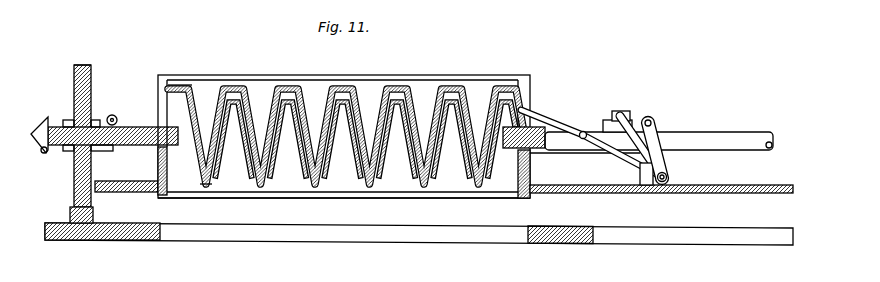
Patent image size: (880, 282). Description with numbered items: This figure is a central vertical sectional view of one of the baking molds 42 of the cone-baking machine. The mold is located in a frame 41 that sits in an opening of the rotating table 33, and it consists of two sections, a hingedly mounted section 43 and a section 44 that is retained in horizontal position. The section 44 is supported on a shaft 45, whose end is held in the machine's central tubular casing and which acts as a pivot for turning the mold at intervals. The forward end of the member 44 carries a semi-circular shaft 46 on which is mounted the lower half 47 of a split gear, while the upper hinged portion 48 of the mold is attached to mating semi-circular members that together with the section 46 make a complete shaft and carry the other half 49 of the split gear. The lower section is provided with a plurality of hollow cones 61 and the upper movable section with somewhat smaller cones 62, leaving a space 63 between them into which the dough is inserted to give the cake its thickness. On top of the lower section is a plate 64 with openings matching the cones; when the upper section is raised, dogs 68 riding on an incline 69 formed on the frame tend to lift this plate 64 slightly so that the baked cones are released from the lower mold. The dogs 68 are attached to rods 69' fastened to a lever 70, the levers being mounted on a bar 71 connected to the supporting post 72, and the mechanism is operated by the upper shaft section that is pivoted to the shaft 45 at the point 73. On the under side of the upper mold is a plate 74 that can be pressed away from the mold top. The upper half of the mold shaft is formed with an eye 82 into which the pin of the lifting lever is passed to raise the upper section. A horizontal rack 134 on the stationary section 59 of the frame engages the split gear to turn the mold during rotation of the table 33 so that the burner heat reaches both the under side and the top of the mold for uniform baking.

The table 33 is at (598, 194).
The frame 41 is at (524, 199).
The baking mold 42 is at (344, 128).
The mold section 43 is at (181, 85).
The mold section 44 is at (194, 150).
The shaft 45 is at (748, 132).
The semi-circular shaft 46 is at (134, 146).
The lower half of split gear 47 is at (74, 181).
The upper hinged portion of the mold 48 is at (126, 127).
The upper half of split gear 49 is at (92, 80).
The stationary section of the frame 59 is at (52, 241).
The hollow cone 61 is at (262, 186).
The cone 62 is at (215, 99).
The space 63 is at (404, 112).
The plate 64 is at (454, 120).
The dog 68 is at (541, 120).
The incline 69 is at (552, 103).
The rod 69' is at (620, 155).
The lever 70 is at (668, 176).
The bar 71 is at (619, 110).
The supporting post 72 is at (658, 128).
The pivot point 73 is at (639, 118).
The plate 74 is at (284, 96).
The eye 82 is at (112, 115).
The horizontal rack 134 is at (93, 212).